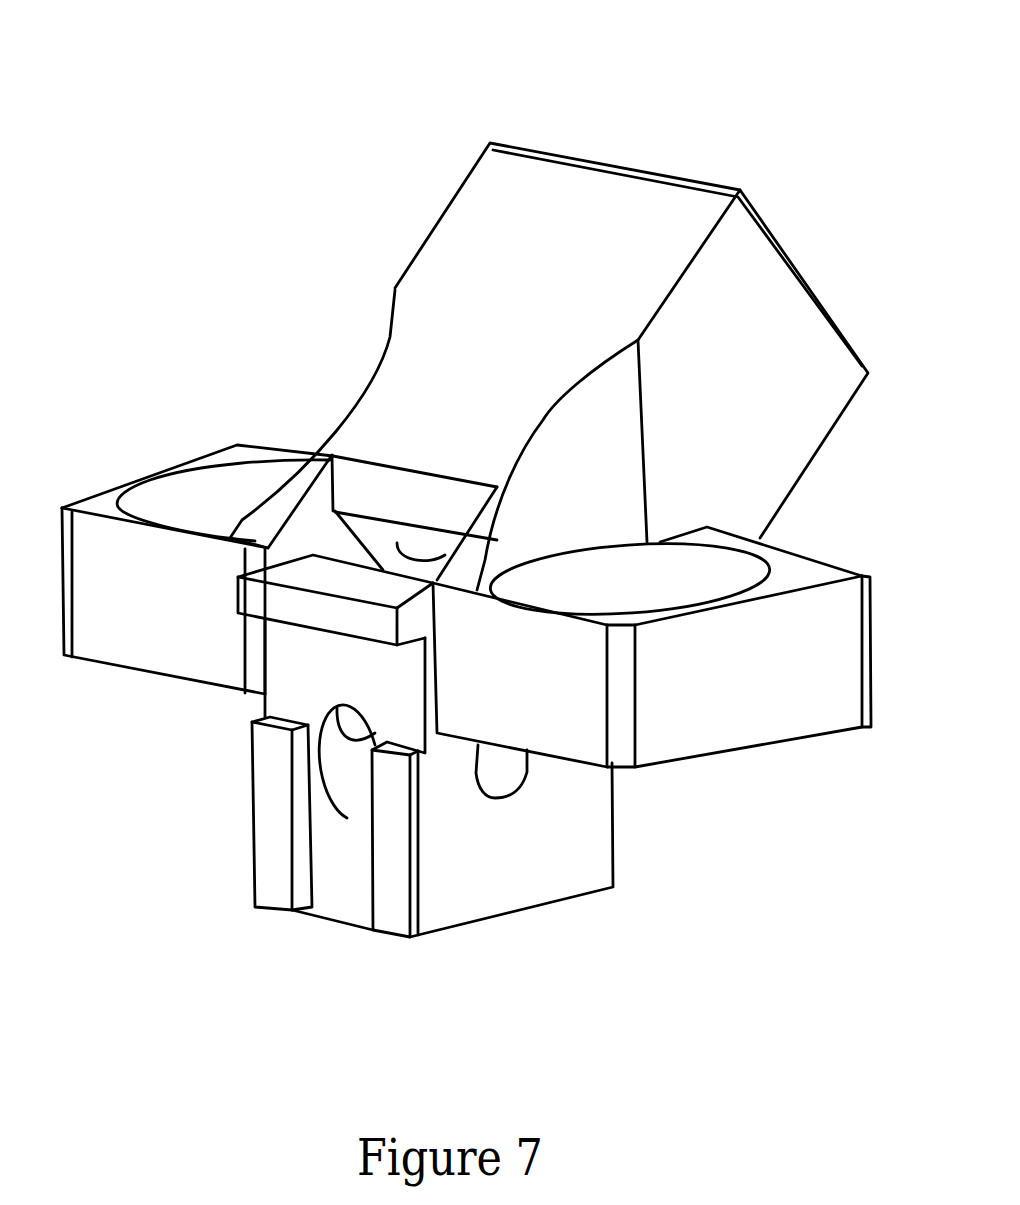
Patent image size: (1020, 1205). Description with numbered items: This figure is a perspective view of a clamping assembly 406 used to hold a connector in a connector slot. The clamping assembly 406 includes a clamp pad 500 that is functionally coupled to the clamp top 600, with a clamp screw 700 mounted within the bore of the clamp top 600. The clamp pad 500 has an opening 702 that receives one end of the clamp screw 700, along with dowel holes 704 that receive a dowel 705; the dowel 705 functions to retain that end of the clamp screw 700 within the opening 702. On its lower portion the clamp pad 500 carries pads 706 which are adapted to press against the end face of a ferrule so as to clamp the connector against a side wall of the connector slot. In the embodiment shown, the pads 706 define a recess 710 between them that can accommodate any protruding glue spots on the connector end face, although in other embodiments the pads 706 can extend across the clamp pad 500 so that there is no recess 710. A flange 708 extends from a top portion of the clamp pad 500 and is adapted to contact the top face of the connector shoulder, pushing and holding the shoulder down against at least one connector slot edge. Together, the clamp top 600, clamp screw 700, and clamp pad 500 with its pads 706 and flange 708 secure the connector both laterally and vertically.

The clamping assembly 406 is at (263, 287).
The clamp pad 500 is at (465, 892).
The clamp top 600 is at (655, 207).
The clamp screw 700 is at (413, 562).
The opening 702 is at (343, 777).
The dowel holes 704 is at (502, 783).
The dowel 705 is at (490, 787).
The pads 706 is at (257, 907).
The flange 708 is at (288, 608).
The recess 710 is at (352, 880).